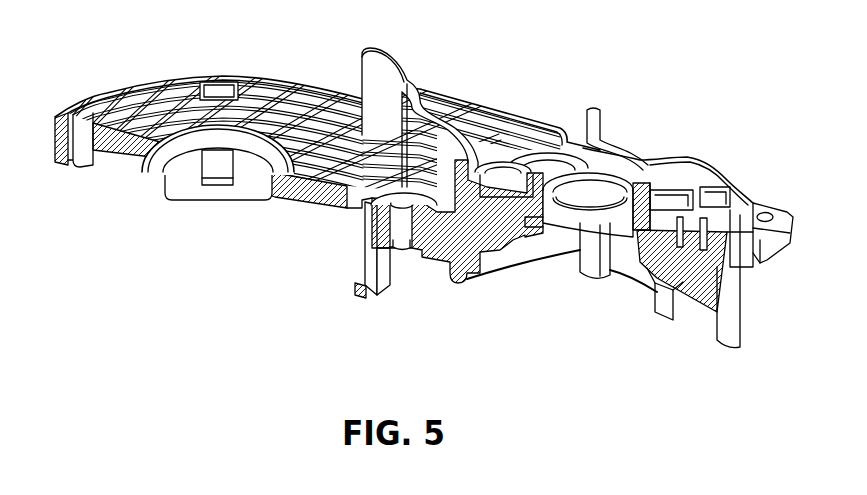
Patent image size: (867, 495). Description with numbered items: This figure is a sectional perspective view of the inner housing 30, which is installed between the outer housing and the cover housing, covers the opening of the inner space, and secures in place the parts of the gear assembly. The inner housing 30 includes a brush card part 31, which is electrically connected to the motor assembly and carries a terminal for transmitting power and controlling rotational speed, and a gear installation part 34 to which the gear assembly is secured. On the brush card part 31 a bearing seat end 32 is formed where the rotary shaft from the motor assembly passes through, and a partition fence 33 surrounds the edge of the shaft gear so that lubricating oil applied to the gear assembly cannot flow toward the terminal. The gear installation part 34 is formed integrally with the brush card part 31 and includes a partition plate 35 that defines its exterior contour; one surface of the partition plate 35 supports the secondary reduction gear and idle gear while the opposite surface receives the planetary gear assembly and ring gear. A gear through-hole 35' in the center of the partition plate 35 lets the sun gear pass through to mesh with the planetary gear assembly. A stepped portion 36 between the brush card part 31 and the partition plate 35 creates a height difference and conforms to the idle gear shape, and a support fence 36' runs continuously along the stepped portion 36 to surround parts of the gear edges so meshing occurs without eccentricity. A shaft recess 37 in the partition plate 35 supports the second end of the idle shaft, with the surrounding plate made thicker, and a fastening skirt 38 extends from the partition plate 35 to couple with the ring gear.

The inner housing 30 is at (528, 99).
The brush card part 31 is at (679, 294).
The bearing seat end 32 is at (556, 198).
The partition fence 33 is at (640, 162).
The gear installation part 34 is at (55, 163).
The partition plate 35 is at (232, 184).
The gear through-hole 35' is at (221, 195).
The stepped portion 36 is at (514, 234).
The support fence 36' is at (505, 93).
The shaft recess 37 is at (398, 230).
The fastening skirt 38 is at (183, 186).